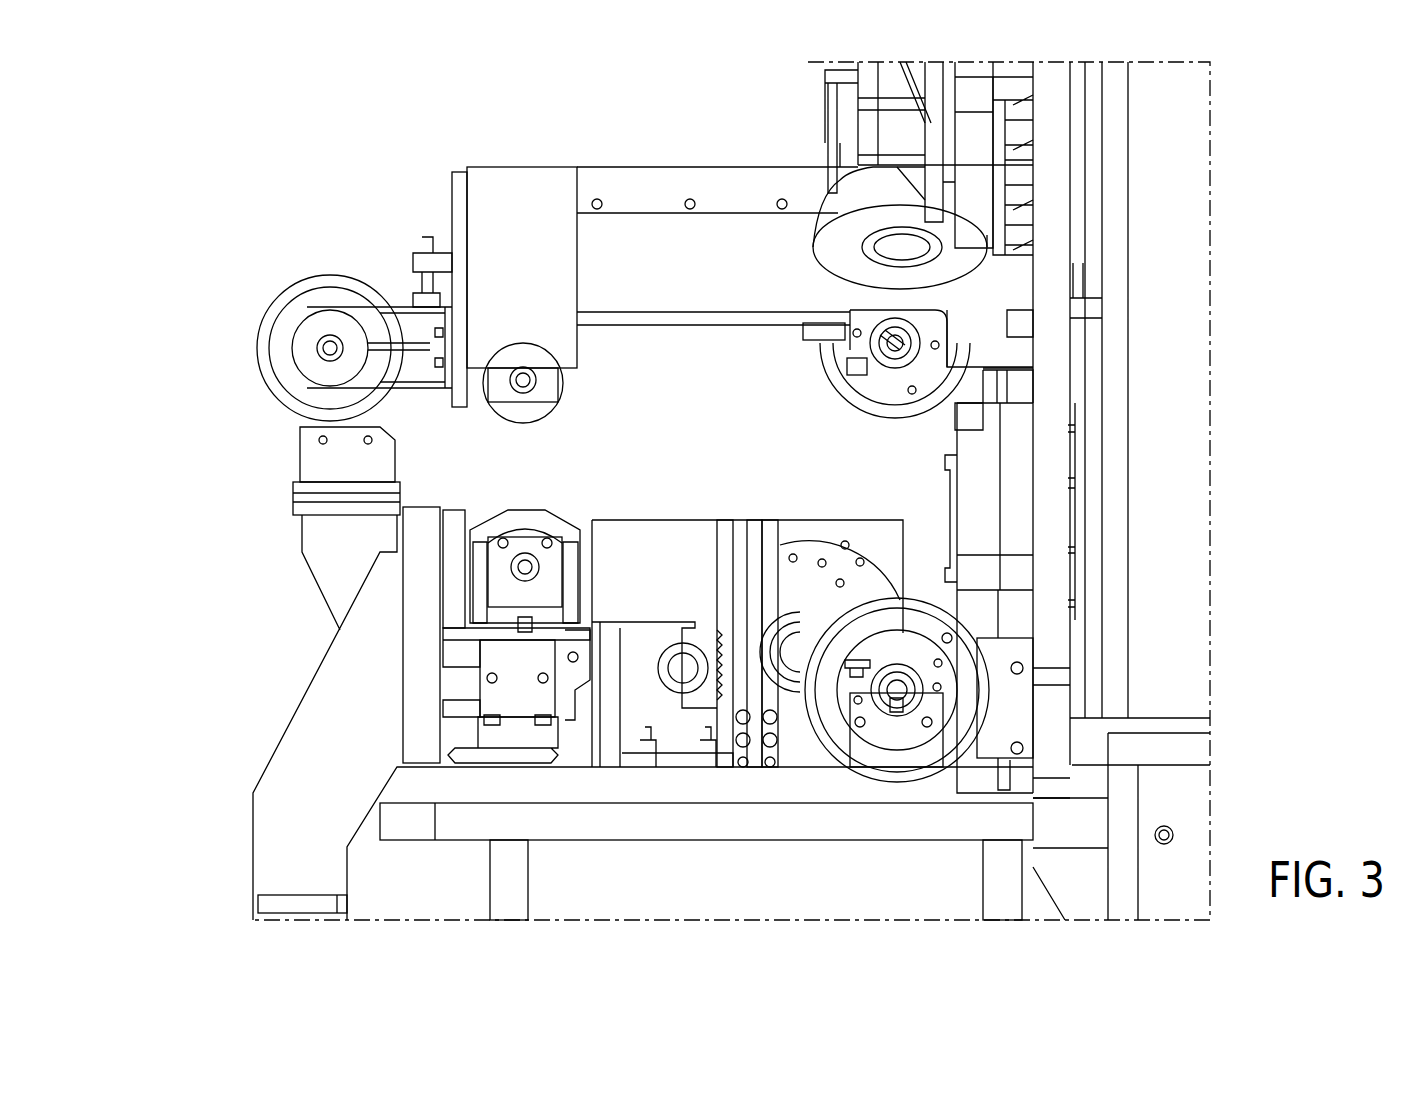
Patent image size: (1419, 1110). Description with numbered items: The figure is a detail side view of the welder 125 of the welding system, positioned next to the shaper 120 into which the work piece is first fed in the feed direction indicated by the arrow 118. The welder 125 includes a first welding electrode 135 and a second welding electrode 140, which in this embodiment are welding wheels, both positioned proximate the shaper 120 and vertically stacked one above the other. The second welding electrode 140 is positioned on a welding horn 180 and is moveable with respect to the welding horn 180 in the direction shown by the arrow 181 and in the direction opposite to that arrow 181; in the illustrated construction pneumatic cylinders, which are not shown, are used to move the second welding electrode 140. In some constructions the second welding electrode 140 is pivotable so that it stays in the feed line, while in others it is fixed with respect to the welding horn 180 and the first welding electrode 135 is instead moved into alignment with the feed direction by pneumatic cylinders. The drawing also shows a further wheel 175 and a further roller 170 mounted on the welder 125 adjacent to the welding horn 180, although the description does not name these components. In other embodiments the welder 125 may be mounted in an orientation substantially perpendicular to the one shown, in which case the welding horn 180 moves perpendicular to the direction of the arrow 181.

The shaper 120 is at (1174, 47).
The arrow 118 is at (1258, 517).
The welder 125 is at (252, 202).
The guide wheel 175 is at (262, 352).
The welding horn 180 is at (635, 233).
The arrow 181 is at (713, 144).
The lower roller 170 is at (548, 402).
The second welding electrode 140 is at (880, 395).
The first welding electrode 135 is at (928, 612).